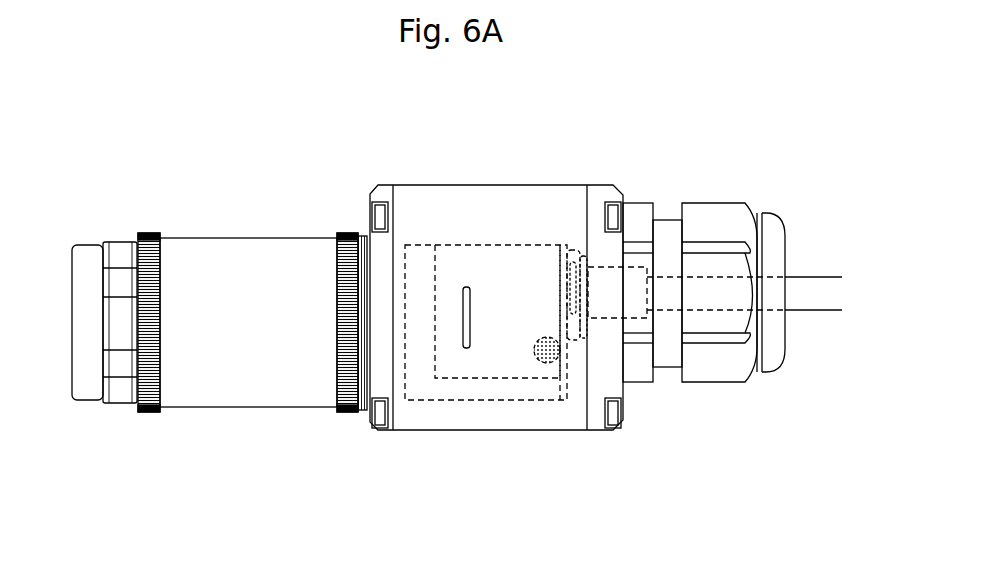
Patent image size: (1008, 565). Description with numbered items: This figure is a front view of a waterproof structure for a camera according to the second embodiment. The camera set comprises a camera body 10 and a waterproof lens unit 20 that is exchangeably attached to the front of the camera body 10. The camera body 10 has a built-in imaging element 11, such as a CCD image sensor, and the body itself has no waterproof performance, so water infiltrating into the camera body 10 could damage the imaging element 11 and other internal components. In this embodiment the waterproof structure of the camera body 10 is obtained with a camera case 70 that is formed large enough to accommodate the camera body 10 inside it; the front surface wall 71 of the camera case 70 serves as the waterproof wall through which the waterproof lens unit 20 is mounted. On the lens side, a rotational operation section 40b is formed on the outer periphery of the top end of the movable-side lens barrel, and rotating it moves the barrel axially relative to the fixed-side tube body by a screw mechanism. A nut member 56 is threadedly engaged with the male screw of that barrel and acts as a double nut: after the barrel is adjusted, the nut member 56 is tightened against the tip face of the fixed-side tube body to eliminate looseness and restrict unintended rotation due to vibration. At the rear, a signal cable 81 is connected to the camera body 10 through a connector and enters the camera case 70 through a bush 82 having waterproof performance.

The camera body 10 is at (514, 418).
The imaging element 11 is at (476, 306).
The waterproof lens unit 20 is at (246, 226).
The rotational operation section 40b is at (117, 403).
The nut member 56 is at (150, 233).
The camera case 70 is at (541, 175).
The front surface wall 71 is at (362, 242).
The signal cable 81 is at (810, 312).
The bush 82 is at (714, 383).